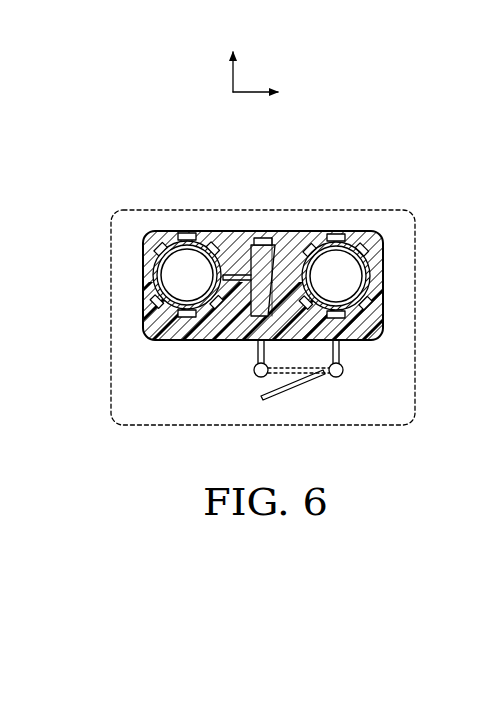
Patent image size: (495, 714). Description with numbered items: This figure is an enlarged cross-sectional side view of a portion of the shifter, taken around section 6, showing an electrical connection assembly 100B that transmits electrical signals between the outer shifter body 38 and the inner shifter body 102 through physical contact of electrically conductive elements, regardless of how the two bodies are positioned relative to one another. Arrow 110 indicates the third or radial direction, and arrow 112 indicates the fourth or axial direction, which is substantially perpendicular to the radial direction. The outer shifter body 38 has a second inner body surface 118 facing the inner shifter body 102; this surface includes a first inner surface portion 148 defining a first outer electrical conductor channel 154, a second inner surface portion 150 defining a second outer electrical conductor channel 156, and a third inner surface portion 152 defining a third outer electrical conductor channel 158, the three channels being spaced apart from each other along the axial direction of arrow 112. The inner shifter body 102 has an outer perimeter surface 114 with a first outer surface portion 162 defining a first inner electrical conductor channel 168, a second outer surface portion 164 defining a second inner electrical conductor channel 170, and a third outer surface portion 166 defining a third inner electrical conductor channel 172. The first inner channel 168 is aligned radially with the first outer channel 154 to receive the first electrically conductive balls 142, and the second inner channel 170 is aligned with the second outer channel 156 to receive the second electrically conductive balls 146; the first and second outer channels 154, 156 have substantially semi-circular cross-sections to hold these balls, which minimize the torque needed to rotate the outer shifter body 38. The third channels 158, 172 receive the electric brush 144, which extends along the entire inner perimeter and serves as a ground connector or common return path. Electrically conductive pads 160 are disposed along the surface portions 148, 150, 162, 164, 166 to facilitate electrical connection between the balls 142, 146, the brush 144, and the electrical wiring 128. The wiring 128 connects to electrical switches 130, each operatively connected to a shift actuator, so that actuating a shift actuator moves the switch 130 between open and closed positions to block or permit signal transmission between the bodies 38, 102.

The section 6 is at (415, 392).
The electrical connection assembly 100B is at (60, 208).
The arrow 110 is at (234, 76).
The arrow 112 is at (250, 92).
The inner shifter body 102 is at (382, 250).
The outer perimeter surface 114 is at (378, 275).
The second inner body surface 118 is at (222, 340).
The electrical wiring 128 is at (260, 345).
The electrical switch 130 is at (318, 383).
The first electrically conductive balls 142 is at (134, 235).
The electric brush 144 is at (238, 273).
The second electrically conductive balls 146 is at (386, 245).
The first inner surface portion 148 is at (146, 290).
The second inner surface portion 150 is at (372, 305).
The third inner surface portion 152 is at (238, 340).
The first outer electrical conductor channel 154 is at (150, 270).
The second outer electrical conductor channel 156 is at (370, 292).
The third outer electrical conductor channel 158 is at (292, 367).
The electrically conductive pads 160 is at (148, 308).
The first outer surface portion 162 is at (203, 240).
The second outer surface portion 164 is at (320, 243).
The third outer surface portion 166 is at (272, 238).
The first inner electrical conductor channel 168 is at (155, 262).
The second inner electrical conductor channel 170 is at (316, 246).
The third inner electrical conductor channel 172 is at (246, 248).
The outer shifter body 38 is at (146, 325).